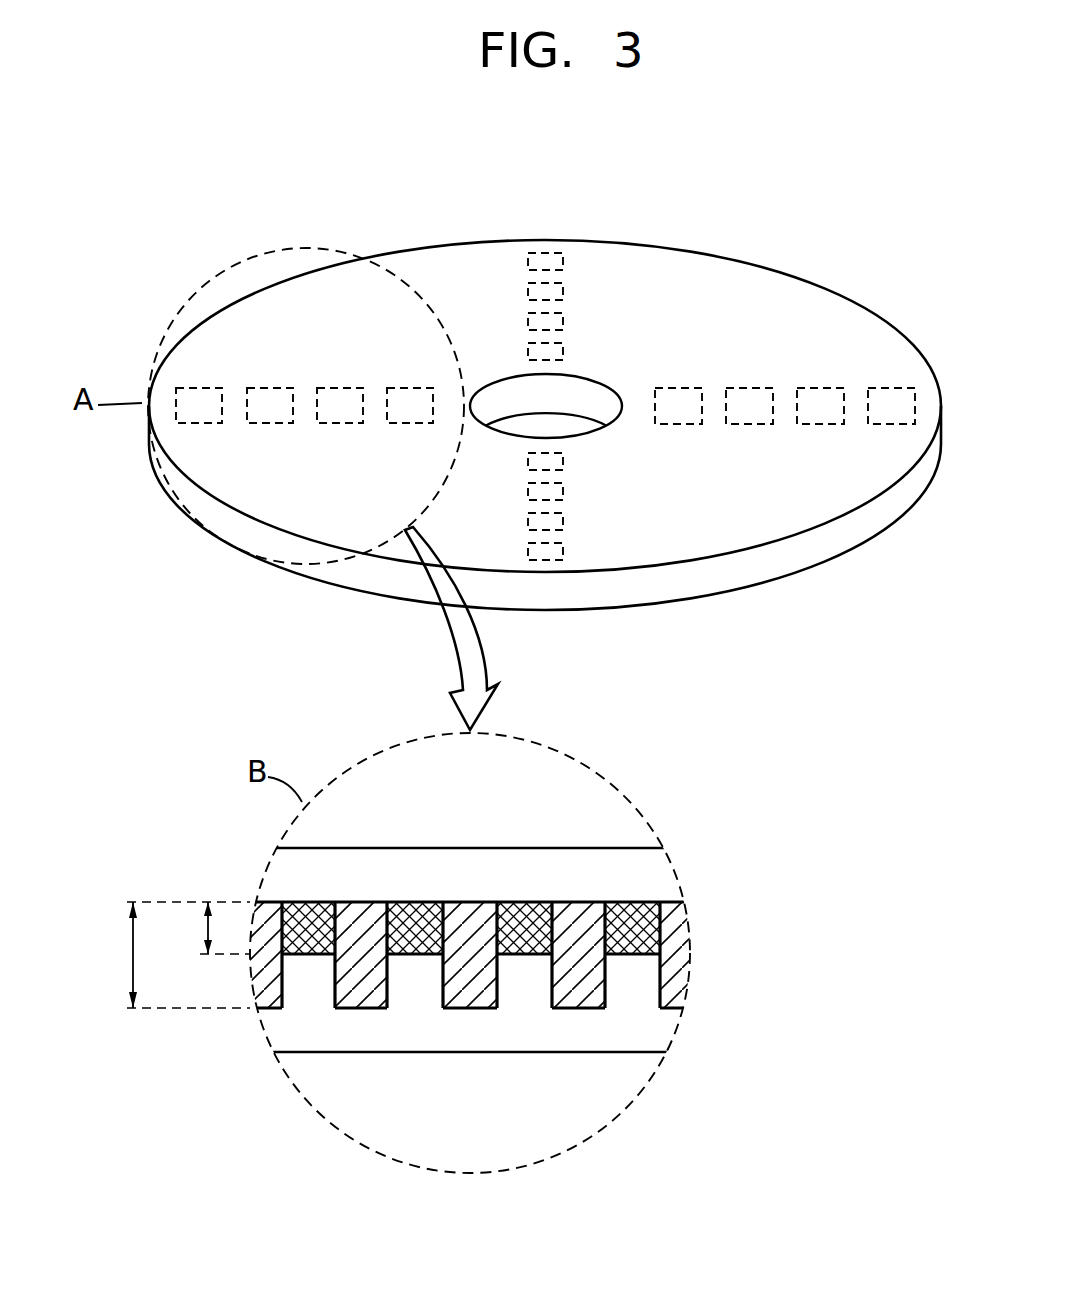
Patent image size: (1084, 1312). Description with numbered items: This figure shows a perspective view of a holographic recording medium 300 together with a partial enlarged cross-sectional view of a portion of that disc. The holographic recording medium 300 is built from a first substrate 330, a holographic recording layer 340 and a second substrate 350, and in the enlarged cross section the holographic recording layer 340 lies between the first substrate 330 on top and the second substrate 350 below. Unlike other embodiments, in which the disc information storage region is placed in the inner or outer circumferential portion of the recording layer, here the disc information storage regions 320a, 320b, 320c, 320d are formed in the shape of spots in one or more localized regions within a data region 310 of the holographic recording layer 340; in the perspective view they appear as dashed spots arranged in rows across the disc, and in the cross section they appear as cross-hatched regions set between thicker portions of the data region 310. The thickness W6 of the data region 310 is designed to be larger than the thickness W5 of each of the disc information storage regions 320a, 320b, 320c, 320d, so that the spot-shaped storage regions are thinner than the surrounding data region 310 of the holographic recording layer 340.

The holographic recording medium 300 is at (545, 383).
The data region 310 is at (667, 265).
The disc information storage region 320a is at (202, 388).
The disc information storage region 320b is at (268, 388).
The disc information storage region 320c is at (340, 388).
The disc information storage region 320d is at (407, 388).
The first substrate 330 is at (462, 866).
The holographic recording layer 340 is at (582, 898).
The second substrate 350 is at (469, 1038).
The thickness of disc information storage region W5 is at (203, 928).
The thickness of data region W6 is at (166, 955).